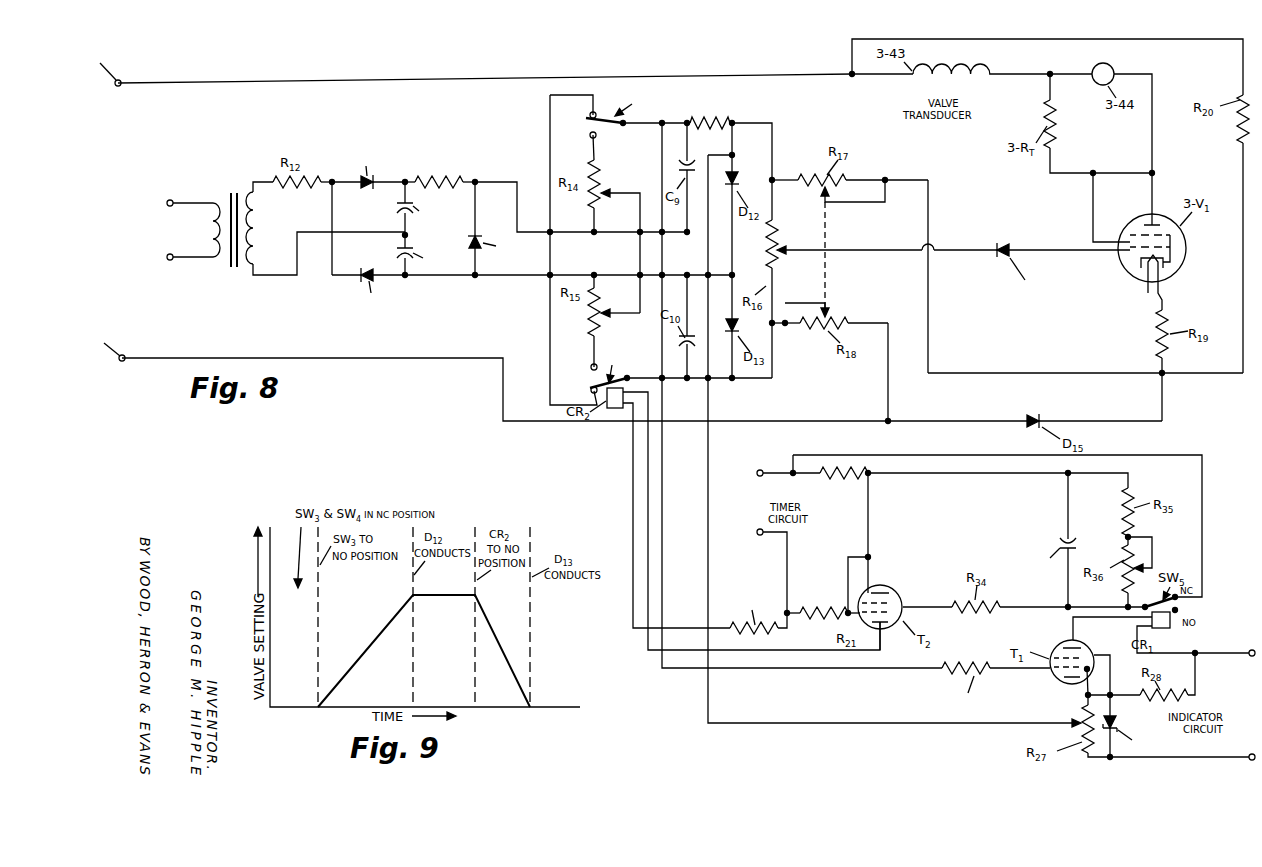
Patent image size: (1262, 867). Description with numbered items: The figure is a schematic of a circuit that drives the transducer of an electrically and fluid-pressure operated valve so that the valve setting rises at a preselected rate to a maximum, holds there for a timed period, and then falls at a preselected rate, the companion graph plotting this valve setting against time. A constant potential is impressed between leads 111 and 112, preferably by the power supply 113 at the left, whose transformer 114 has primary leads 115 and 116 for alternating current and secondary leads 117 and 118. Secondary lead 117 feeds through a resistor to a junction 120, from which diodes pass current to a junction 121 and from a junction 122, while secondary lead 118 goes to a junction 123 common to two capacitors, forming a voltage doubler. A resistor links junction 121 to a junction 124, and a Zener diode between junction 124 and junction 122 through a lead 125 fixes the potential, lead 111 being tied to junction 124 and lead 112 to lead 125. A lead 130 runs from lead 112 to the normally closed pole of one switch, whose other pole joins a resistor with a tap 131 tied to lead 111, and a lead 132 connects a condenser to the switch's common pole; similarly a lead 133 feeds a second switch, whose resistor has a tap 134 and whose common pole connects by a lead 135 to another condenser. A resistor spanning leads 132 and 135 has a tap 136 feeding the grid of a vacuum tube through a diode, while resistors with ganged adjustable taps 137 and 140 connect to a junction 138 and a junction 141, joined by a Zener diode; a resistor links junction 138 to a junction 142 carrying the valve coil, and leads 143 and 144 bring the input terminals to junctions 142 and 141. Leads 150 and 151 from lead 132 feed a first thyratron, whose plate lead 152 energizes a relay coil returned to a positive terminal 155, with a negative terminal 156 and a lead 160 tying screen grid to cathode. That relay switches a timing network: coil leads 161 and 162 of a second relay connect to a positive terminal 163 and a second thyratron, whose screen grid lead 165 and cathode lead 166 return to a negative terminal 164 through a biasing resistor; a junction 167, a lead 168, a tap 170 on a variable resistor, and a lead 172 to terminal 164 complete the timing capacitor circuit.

The lead 111 is at (519, 217).
The lead 112 is at (500, 278).
The power supply circuit 113 is at (463, 150).
The transformer 114 is at (232, 193).
The primary lead 115 is at (168, 201).
The primary lead 116 is at (168, 259).
The secondary lead 117 is at (261, 181).
The secondary lead 118 is at (275, 278).
The junction 120 is at (332, 180).
The junction 121 is at (405, 180).
The junction 122 is at (405, 278).
The junction 123 is at (403, 234).
The junction 124 is at (475, 180).
The lead 125 is at (458, 278).
The lead 130 is at (549, 132).
The tap 131 is at (640, 190).
The lead 132 is at (646, 126).
The lead 133 is at (550, 326).
The tap 134 is at (640, 316).
The lead 135 is at (657, 376).
The tap 136 is at (797, 248).
The adjustable tap 137 is at (851, 204).
The junction 138 is at (1166, 378).
The adjustable tap 140 is at (812, 302).
The junction 141 is at (884, 418).
The junction 142 is at (852, 80).
The lead 143 is at (456, 80).
The lead 144 is at (307, 356).
The lead 150 is at (664, 548).
The lead 151 is at (708, 562).
The lead 152 is at (1072, 631).
The positive terminal 155 is at (1250, 658).
The negative terminal 156 is at (1250, 762).
The lead 160 is at (1102, 655).
The coil lead 161 is at (632, 462).
The coil lead 162 is at (650, 469).
The positive terminal 163 is at (758, 529).
The negative terminal 164 is at (758, 476).
The lead 165 is at (847, 602).
The lead 166 is at (872, 529).
The junction 167 is at (1066, 606).
The lead 168 is at (1067, 509).
The tap 170 is at (1154, 560).
The lead 172 is at (932, 457).